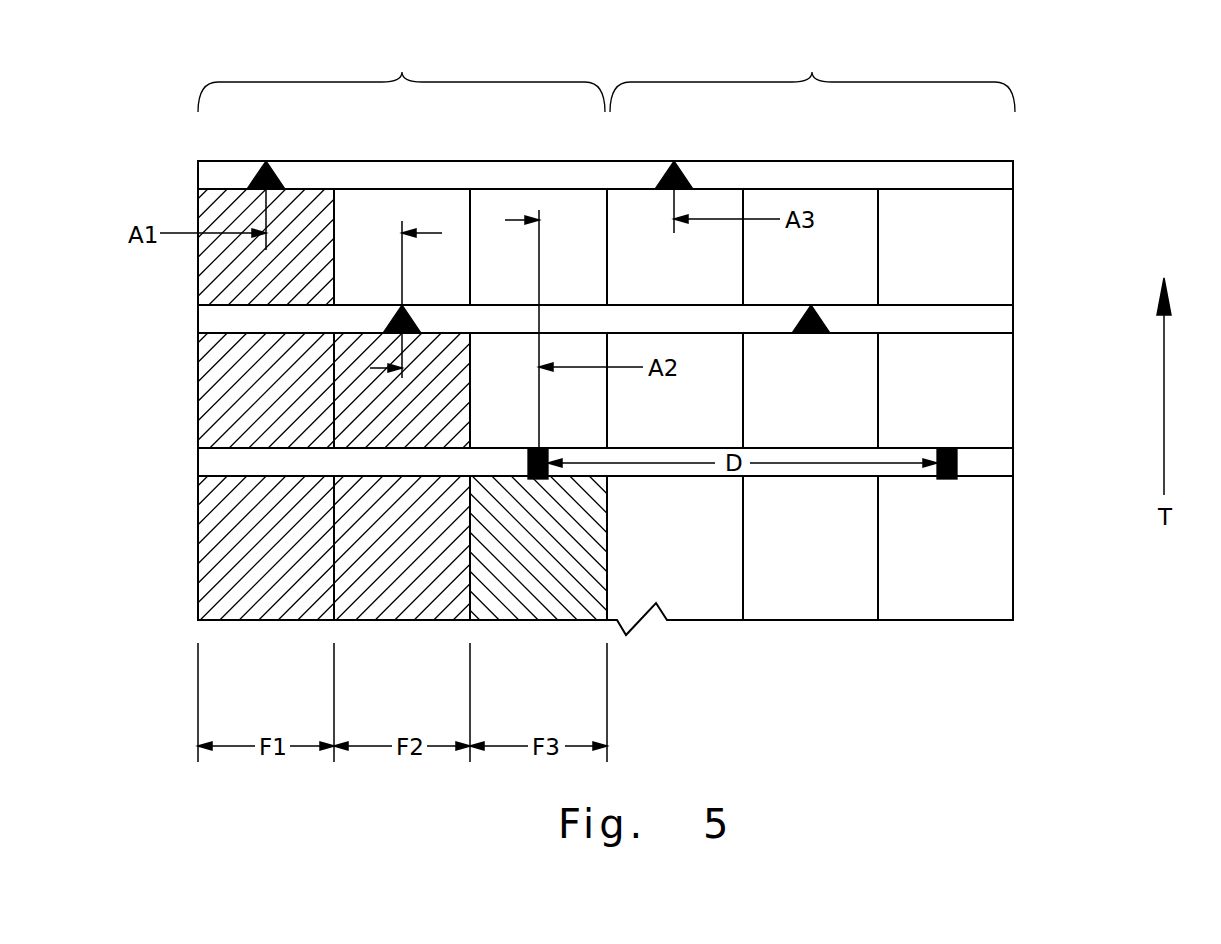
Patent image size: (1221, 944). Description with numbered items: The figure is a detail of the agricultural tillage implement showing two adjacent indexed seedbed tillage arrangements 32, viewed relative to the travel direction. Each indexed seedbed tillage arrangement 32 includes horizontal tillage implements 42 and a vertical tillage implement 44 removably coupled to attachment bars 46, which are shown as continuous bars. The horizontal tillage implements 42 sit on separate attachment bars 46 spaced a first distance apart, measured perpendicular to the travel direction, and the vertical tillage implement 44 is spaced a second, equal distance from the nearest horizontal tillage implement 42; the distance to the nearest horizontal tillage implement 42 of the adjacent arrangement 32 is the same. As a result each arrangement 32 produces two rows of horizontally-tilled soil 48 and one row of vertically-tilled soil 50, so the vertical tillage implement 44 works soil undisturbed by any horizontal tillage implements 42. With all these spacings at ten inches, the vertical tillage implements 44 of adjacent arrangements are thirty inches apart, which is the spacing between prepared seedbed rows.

The indexed seedbed tillage arrangement 32 is at (606, 76).
The horizontal tillage implement 42 is at (277, 178).
The vertical tillage implement 44 is at (543, 447).
The attachment bar 46 is at (1005, 173).
The horizontally-tilled soil 48 is at (220, 278).
The vertically-tilled soil 50 is at (557, 602).